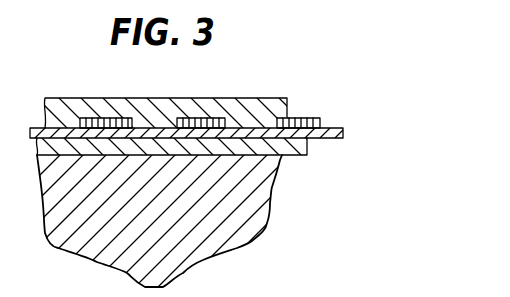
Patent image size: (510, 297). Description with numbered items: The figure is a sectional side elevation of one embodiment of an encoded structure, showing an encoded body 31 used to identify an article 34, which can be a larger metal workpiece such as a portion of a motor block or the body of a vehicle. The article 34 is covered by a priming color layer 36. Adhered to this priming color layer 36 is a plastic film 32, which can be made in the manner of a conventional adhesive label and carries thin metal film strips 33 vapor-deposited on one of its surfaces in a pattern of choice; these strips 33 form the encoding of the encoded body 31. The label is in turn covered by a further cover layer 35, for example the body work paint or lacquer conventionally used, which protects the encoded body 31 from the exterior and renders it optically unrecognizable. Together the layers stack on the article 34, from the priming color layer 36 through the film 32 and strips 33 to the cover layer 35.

The encoded body 31 is at (350, 120).
The plastic film 32 is at (309, 145).
The metal film strips 33 is at (312, 118).
The article 34 is at (213, 251).
The cover layer 35 is at (151, 108).
The priming color layer 36 is at (144, 152).